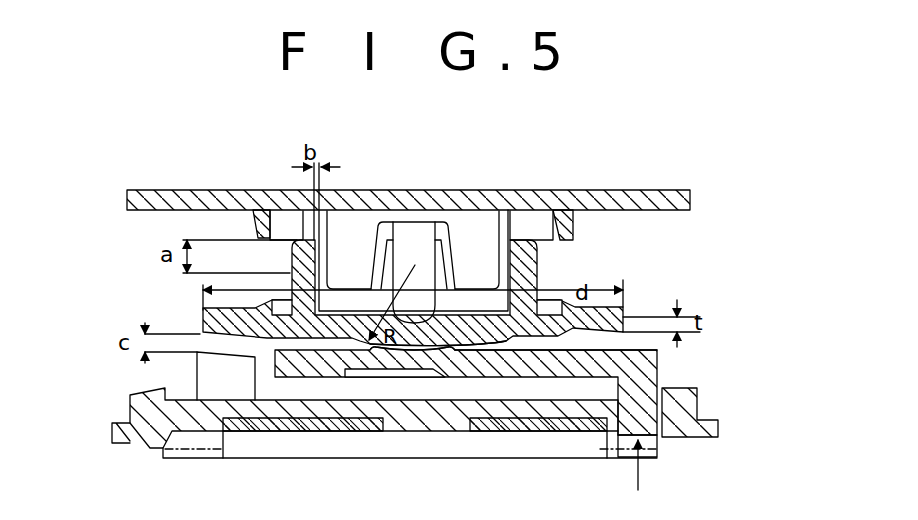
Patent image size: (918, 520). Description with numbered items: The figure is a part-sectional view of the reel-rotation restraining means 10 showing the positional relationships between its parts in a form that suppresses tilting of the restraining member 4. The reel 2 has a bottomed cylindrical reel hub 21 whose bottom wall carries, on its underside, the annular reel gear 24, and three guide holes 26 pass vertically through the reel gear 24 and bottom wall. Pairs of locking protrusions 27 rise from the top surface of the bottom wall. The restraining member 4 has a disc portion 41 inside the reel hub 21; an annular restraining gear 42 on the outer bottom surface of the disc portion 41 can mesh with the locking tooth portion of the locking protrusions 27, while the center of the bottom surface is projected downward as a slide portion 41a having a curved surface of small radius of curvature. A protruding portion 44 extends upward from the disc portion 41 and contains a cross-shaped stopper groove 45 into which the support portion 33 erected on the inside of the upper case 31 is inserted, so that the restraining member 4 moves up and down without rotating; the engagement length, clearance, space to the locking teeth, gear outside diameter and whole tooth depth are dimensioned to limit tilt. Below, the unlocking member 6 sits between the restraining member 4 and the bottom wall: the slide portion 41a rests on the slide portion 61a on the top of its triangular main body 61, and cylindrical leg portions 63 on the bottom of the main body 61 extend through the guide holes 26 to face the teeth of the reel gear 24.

The upper case 31 is at (157, 205).
The protruding portion 44 is at (300, 238).
The support portion 33 is at (353, 243).
The stopper groove 45 is at (508, 240).
The restraining member 4 is at (540, 258).
The reel-rotation restraining means 10 is at (593, 252).
The restraining gear 42 is at (202, 328).
The locking protrusions 27 is at (196, 370).
The reel 2 is at (143, 447).
The reel gear 24 is at (190, 460).
The unlocking member 6 is at (310, 388).
The main body 61 is at (363, 371).
The slide portion 61a is at (447, 343).
The slide portion 41a is at (468, 330).
The disc portion 41 is at (518, 353).
The leg portions 63 is at (660, 374).
The reel hub 21 is at (688, 402).
The guide holes 26 is at (670, 433).